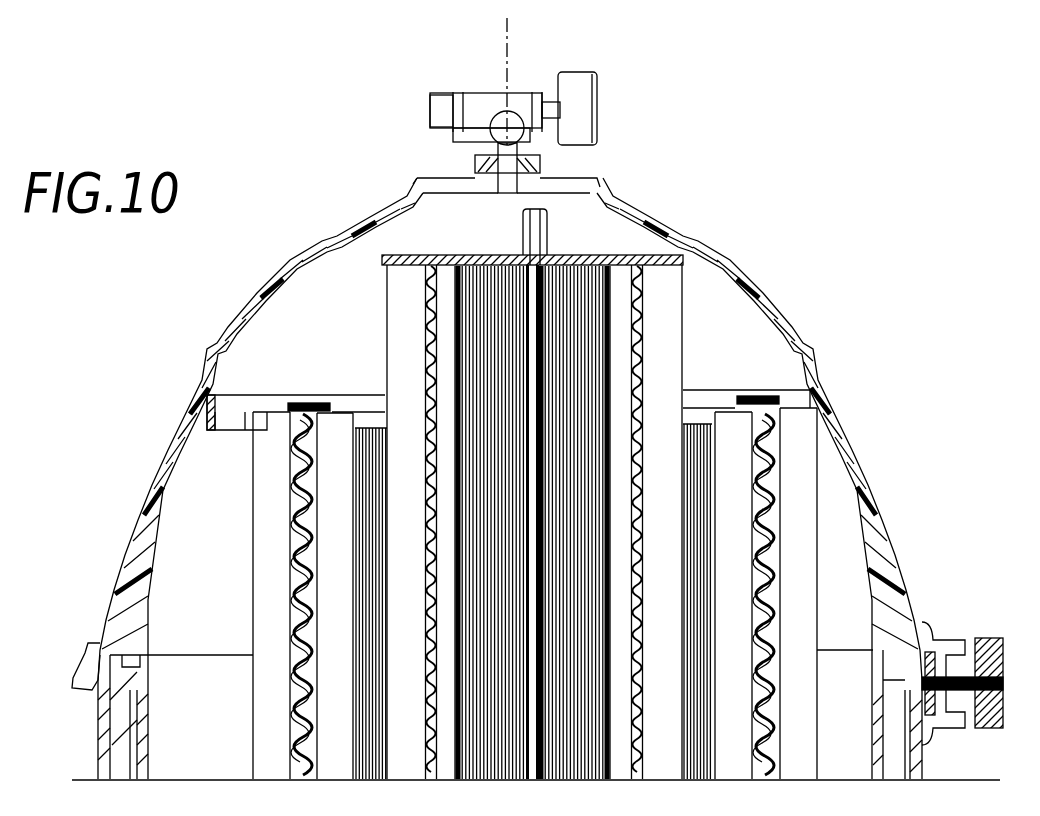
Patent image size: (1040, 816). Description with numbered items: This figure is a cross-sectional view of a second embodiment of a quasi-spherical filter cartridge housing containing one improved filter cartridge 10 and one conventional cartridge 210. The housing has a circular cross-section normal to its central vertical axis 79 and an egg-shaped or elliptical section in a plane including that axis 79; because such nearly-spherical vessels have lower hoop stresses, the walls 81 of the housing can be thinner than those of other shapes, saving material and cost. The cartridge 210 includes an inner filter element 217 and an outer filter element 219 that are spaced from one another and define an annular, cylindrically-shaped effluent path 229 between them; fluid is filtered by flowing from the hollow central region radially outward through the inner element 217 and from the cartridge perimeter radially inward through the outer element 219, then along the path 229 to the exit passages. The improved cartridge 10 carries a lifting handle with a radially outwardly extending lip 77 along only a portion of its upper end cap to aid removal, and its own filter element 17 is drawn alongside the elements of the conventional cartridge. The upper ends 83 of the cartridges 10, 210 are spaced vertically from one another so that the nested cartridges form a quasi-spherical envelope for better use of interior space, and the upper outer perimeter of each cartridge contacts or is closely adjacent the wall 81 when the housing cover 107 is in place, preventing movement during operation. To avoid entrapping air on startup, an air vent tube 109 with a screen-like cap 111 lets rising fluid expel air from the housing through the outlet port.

The filter cartridge 10 is at (330, 398).
The filter element 17 is at (733, 532).
The radially outwardly extending lip 77 is at (208, 430).
The housing central vertical axis 79 is at (510, 32).
The housing wall 81 is at (820, 372).
The upper end of cartridge 83 is at (410, 252).
The housing cover 107 is at (773, 308).
The air vent tube 109 is at (537, 207).
The screen-like cap 111 is at (520, 228).
The cartridge 210 is at (652, 290).
The inner filter element 217 is at (618, 268).
The outer filter element 219 is at (668, 297).
The effluent path 229 is at (728, 405).